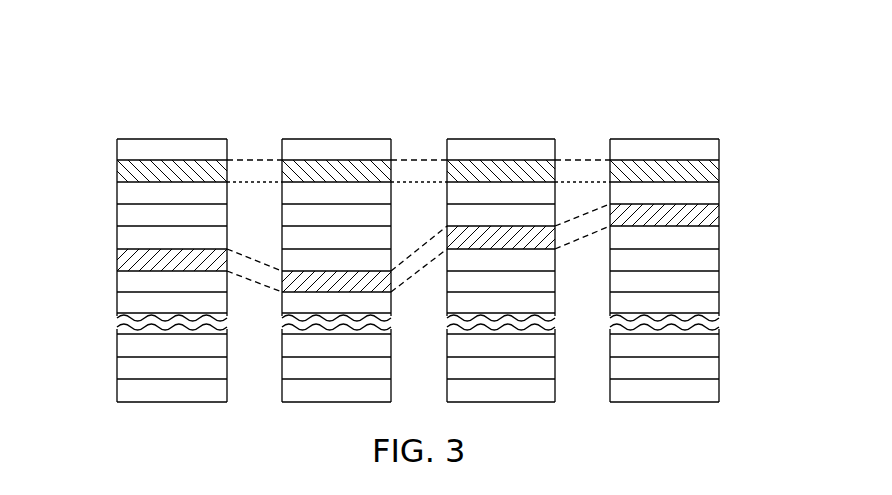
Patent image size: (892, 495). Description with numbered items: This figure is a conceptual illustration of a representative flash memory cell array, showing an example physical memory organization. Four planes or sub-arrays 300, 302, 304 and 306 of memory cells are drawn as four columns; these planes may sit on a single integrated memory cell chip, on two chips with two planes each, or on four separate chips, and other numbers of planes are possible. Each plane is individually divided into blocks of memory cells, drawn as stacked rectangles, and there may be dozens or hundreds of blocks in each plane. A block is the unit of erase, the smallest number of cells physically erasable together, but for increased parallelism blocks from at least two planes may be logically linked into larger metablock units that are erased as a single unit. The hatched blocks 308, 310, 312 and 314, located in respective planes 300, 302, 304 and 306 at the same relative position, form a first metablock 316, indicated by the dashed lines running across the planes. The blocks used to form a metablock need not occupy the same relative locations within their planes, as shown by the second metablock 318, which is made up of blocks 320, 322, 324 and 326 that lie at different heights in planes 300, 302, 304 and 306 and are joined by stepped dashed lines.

The plane 300 is at (170, 137).
The plane 302 is at (337, 137).
The plane 304 is at (500, 137).
The plane 306 is at (695, 142).
The block 308 is at (150, 170).
The block 310 is at (318, 170).
The block 312 is at (483, 170).
The block 314 is at (687, 170).
The first metablock 316 is at (582, 160).
The second metablock 318 is at (583, 215).
The block 320 is at (150, 258).
The block 322 is at (313, 282).
The block 324 is at (490, 237).
The block 326 is at (687, 213).